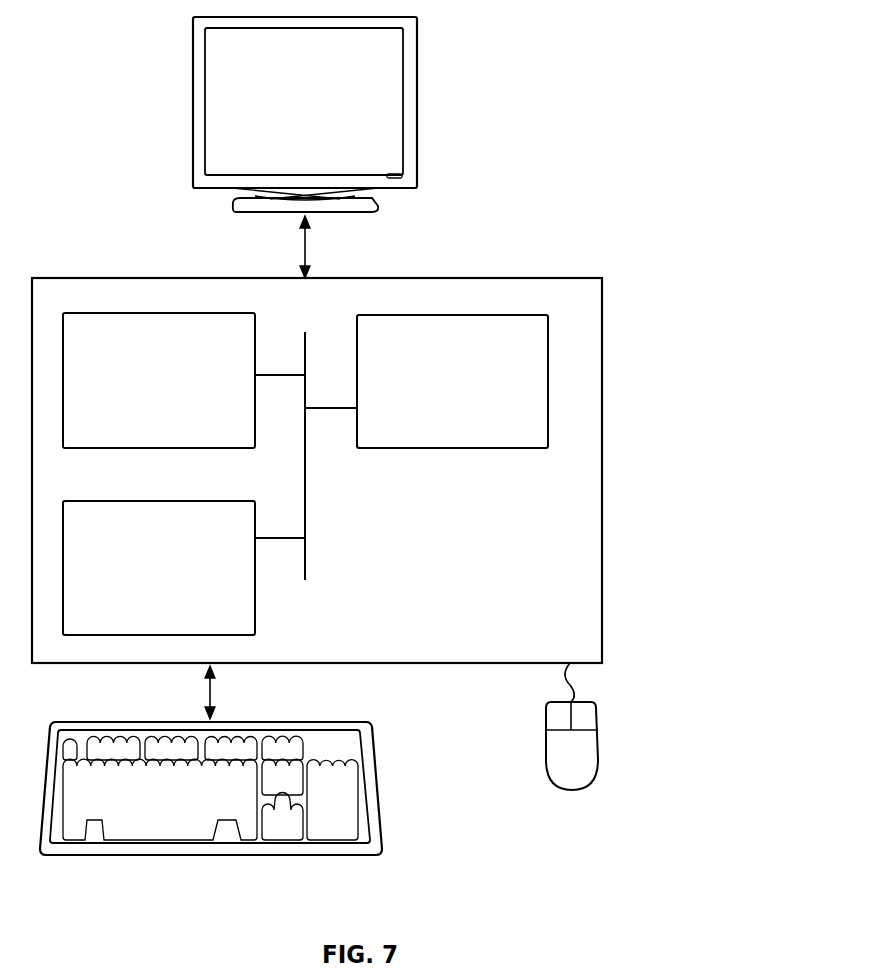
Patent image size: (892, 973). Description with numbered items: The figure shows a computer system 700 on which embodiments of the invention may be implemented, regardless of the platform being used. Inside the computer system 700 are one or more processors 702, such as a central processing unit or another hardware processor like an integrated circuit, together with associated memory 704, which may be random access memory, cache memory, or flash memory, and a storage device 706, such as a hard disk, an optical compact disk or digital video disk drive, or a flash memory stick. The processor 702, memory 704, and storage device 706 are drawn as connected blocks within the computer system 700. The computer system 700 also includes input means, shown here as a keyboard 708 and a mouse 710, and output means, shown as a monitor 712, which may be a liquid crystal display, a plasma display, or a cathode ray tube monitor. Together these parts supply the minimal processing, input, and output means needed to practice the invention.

The computer system 700 is at (402, 444).
The processor 702 is at (435, 380).
The memory 704 is at (140, 381).
The storage device 706 is at (141, 565).
The keyboard 708 is at (141, 798).
The mouse 710 is at (601, 796).
The monitor 712 is at (283, 110).